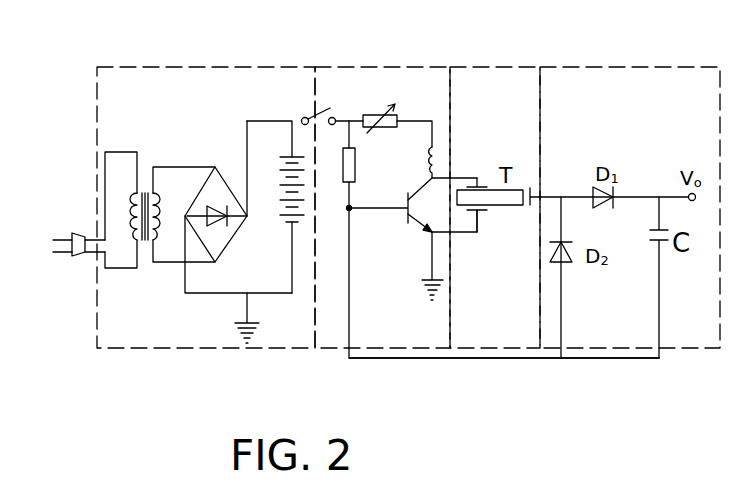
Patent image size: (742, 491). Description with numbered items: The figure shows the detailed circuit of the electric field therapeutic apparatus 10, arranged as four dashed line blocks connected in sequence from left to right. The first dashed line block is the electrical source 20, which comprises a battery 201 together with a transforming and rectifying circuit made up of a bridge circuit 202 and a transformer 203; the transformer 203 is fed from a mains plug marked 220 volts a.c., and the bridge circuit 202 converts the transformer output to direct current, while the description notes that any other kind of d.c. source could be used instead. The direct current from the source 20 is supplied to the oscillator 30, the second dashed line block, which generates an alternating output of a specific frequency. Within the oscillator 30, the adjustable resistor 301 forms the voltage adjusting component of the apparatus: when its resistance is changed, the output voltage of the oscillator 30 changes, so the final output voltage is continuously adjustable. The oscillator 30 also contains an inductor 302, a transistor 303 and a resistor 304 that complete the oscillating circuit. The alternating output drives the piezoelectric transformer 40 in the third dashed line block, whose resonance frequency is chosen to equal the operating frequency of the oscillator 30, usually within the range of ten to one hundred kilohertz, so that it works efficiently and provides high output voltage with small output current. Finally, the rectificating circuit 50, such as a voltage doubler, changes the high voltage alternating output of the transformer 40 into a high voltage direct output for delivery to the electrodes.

The electric field therapeutic apparatus 10 is at (357, 405).
The electrical source 20 is at (152, 67).
The oscillator 30 is at (353, 67).
The piezoelectric transformer 40 is at (482, 67).
The rectificating circuit 50 is at (605, 67).
The battery 201 is at (283, 224).
The bridge circuit 202 is at (202, 243).
The transformer 203 is at (143, 243).
The AC mains plug 220 is at (67, 265).
The adjustable resistor 301 is at (398, 121).
The inductor 302 is at (434, 160).
The transistor 303 is at (413, 239).
The resistor 304 is at (346, 165).